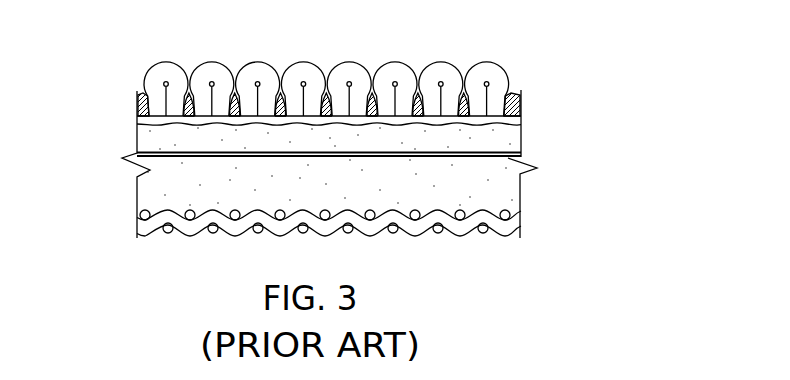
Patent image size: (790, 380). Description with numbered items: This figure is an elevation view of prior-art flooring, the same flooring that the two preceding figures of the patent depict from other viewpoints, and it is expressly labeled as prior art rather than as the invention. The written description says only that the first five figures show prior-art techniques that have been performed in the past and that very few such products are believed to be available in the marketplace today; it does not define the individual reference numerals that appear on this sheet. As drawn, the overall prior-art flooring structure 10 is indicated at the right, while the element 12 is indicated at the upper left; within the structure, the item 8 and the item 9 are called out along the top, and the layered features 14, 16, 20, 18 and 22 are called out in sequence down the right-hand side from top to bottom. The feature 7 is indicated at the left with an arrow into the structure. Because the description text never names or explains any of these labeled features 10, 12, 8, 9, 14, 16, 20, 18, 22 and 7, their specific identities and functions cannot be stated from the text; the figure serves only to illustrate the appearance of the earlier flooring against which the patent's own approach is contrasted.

The display device (prior art) 10 is at (614, 79).
The light source layer 12 is at (128, 71).
The light emitting element 8 is at (482, 75).
The reflecting portion 9 is at (514, 90).
The substrate 14 is at (521, 117).
The light guide layer 16 is at (512, 137).
The reflective sheet 20 is at (521, 154).
The diffusion layer 18 is at (512, 185).
The bead layer 22 is at (521, 220).
The light emission direction 7 is at (160, 133).